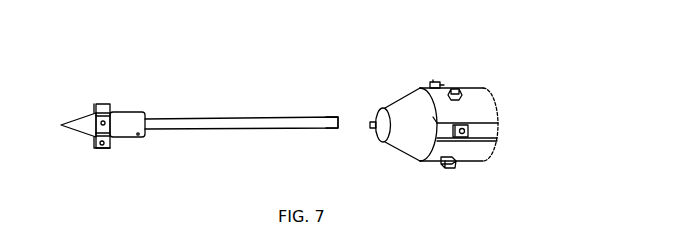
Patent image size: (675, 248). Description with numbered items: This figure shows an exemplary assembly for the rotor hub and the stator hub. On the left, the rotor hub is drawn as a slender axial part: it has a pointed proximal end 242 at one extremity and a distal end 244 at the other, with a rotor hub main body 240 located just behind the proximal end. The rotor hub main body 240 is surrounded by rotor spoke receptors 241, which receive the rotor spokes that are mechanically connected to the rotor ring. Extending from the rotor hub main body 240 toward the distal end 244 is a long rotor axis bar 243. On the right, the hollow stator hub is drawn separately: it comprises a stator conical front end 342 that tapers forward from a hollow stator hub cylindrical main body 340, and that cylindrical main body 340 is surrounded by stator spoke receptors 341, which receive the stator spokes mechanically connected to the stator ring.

The rotor hub main body 240 is at (131, 140).
The rotor spoke receptors 241 is at (100, 105).
The proximal end 242 is at (77, 122).
The rotor axis bar 243 is at (163, 125).
The distal end 244 is at (331, 127).
The hollow stator hub cylindrical main body 340 is at (472, 113).
The stator spoke receptors 341 is at (430, 85).
The stator conical front end 342 is at (385, 113).